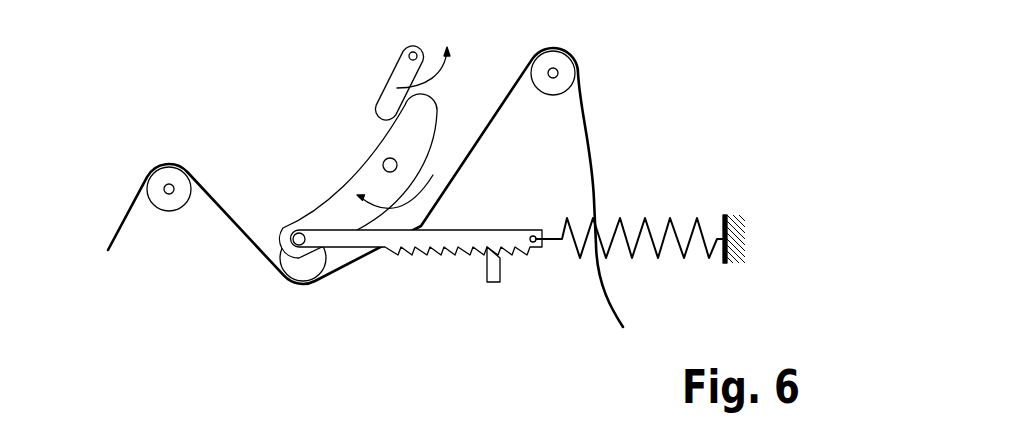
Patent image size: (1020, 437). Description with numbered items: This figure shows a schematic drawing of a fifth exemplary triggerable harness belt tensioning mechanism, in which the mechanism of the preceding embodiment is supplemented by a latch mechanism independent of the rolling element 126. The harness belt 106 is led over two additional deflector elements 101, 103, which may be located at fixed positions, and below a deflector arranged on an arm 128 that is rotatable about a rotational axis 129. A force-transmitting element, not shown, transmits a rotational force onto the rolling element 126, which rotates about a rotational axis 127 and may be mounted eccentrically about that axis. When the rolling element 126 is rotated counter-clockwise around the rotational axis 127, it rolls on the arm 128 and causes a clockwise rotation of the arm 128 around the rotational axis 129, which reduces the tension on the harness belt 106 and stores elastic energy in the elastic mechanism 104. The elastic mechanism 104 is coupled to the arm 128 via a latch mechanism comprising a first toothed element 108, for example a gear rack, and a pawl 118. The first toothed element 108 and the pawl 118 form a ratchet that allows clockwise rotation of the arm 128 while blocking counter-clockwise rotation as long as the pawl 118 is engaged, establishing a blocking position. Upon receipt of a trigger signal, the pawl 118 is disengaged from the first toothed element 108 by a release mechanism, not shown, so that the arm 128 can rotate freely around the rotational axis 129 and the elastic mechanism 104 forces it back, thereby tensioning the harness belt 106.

The additional deflector element 101 is at (157, 174).
The additional deflector element 103 is at (565, 64).
The elastic mechanism 104 is at (678, 247).
The harness belt 106 is at (597, 177).
The first toothed element 108 is at (423, 253).
The pawl 118 is at (498, 270).
The rolling element 126 is at (385, 102).
The rotational axis 127 is at (409, 55).
The arm 128 is at (338, 207).
The rotational axis 129 is at (384, 163).